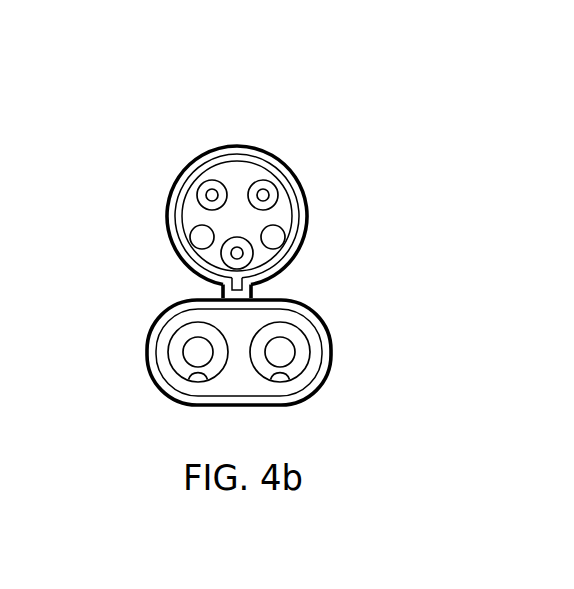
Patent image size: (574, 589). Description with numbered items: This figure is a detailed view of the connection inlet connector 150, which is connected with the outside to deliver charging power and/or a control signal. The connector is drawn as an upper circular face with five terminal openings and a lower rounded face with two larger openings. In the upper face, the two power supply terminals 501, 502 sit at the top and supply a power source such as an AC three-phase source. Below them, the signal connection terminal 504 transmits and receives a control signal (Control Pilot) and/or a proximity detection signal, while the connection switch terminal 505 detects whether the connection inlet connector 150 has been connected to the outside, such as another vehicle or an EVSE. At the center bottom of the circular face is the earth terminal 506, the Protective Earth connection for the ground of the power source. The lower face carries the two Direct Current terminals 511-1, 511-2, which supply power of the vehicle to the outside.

The connection inlet connector 150 is at (270, 94).
The power supply terminal 501 is at (213, 180).
The power supply terminal 502 is at (276, 186).
The signal connection terminal 504 is at (285, 233).
The connection switch terminal 505 is at (202, 238).
The earth terminal 506 is at (245, 254).
The Direct Current terminal 511-1 is at (177, 332).
The Direct Current terminal 511-2 is at (301, 331).